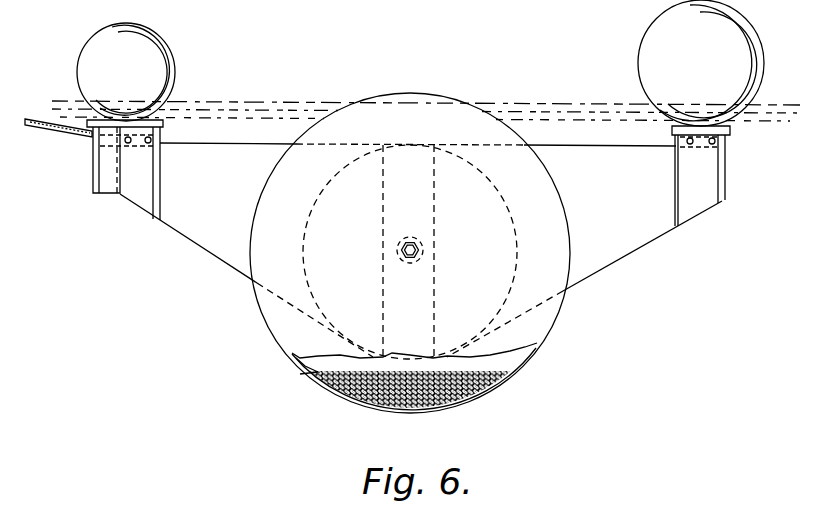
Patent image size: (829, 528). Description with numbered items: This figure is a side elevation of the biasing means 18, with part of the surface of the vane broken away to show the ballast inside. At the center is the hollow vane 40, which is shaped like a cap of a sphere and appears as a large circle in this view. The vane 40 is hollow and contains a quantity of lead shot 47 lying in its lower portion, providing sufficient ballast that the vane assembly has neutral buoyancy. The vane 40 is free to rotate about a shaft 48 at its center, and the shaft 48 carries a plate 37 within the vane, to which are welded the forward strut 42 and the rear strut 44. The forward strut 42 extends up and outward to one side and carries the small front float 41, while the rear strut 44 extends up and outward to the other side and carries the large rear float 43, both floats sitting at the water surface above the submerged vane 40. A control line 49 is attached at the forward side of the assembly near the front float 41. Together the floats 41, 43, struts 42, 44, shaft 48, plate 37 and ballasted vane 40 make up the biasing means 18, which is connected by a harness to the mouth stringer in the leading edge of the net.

The biasing means 18 is at (588, 320).
The plate 37 is at (310, 208).
The hollow vane 40 is at (271, 317).
The small front float 41 is at (153, 53).
The forward strut 42 is at (182, 218).
The large rear float 43 is at (652, 35).
The rear strut 44 is at (635, 240).
The lead shot 47 is at (305, 364).
The shaft 48 is at (420, 245).
The control line 49 is at (56, 131).